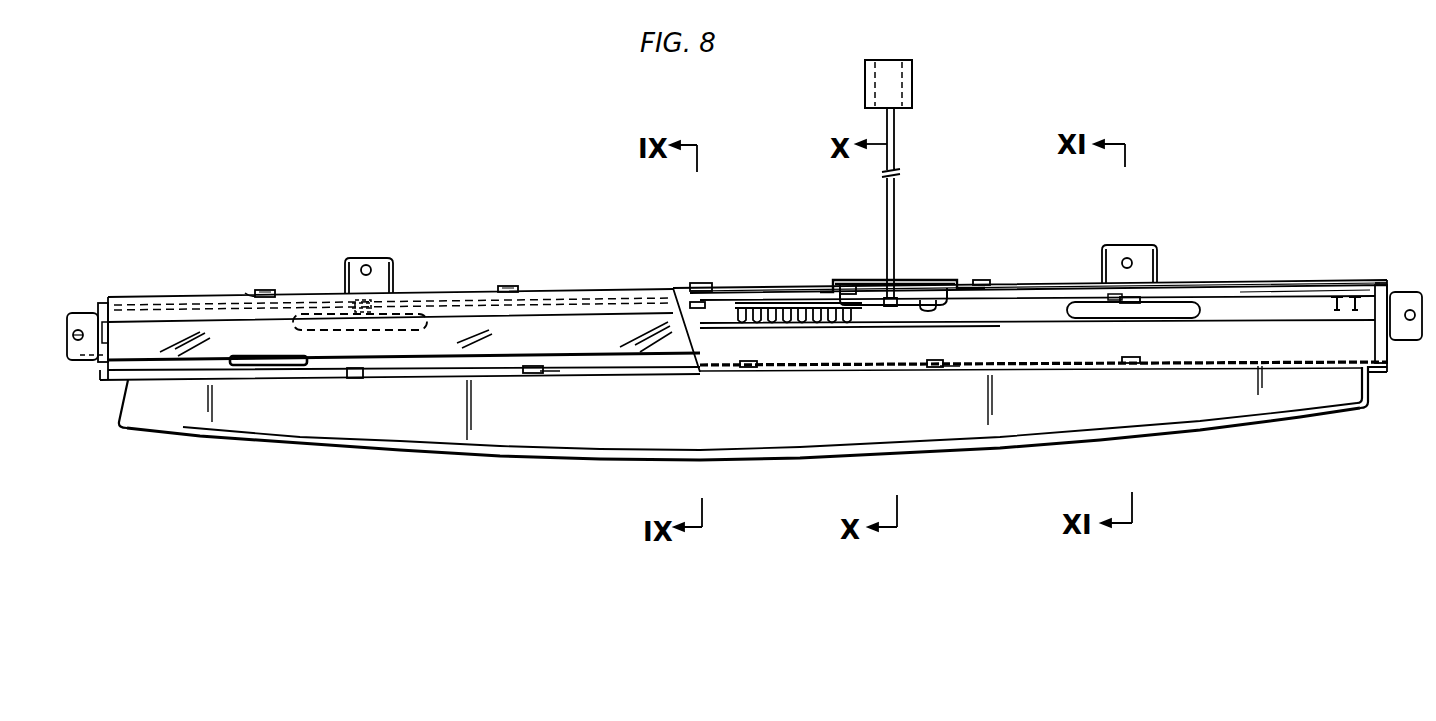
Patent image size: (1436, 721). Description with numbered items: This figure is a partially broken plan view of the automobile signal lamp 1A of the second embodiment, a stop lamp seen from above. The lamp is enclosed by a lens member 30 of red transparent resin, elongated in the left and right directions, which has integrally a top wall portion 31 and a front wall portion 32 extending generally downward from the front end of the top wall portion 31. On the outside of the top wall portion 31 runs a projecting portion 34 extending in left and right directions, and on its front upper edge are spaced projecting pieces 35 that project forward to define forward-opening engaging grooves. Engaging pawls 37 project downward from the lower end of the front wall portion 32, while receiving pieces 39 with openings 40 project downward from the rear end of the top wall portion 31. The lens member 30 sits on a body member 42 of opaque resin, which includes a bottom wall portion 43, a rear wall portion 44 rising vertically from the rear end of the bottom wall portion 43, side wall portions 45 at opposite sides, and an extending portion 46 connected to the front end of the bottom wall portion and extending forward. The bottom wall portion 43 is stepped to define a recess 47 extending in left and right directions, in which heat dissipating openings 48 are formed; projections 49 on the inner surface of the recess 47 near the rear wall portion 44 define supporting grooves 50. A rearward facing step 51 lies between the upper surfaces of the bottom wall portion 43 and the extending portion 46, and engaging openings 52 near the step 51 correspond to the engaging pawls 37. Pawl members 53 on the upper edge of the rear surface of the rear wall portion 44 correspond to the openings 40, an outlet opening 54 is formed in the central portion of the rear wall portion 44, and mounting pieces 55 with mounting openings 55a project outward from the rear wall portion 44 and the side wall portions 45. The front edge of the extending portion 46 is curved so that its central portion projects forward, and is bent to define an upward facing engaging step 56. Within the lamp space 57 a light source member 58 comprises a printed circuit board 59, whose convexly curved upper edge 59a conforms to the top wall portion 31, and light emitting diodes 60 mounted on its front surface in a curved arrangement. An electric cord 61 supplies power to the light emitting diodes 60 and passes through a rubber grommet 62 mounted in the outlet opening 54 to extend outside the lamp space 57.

The automobile signal lamp 1A is at (538, 182).
The lens member 30 is at (640, 377).
The top wall portion 31 is at (592, 330).
The front wall portion 32 is at (805, 378).
The projecting portion 34 is at (452, 318).
The projecting pieces 35 is at (265, 367).
The engaging pawls 37 is at (548, 376).
The receiving pieces 39 is at (262, 290).
The openings 40 is at (245, 294).
The body member 42 is at (1380, 283).
The bottom wall portion 43 is at (1372, 385).
The rear wall portion 44 is at (1295, 284).
The side wall portions 45 is at (103, 305).
The extending portion 46 is at (945, 428).
The recess 47 is at (1382, 300).
The heat dissipating openings 48 is at (400, 331).
The projections 49 is at (362, 300).
The supporting grooves 50 is at (915, 285).
The rearward facing step 51 is at (1200, 355).
The engaging openings 52 is at (352, 378).
The pawl members 53 is at (270, 290).
The outlet opening 54 is at (880, 290).
The mounting pieces 55 is at (78, 312).
The mounting openings 55a is at (78, 345).
The upward facing engaging step 56 is at (1267, 405).
The lamp space 57 is at (1030, 326).
The light source member 58 is at (791, 214).
The printed circuit board 59 is at (700, 302).
The upper edge 59a is at (1268, 292).
The light emitting diodes 60 is at (740, 318).
The electric cord 61 is at (885, 127).
The rubber grommet 62 is at (898, 296).